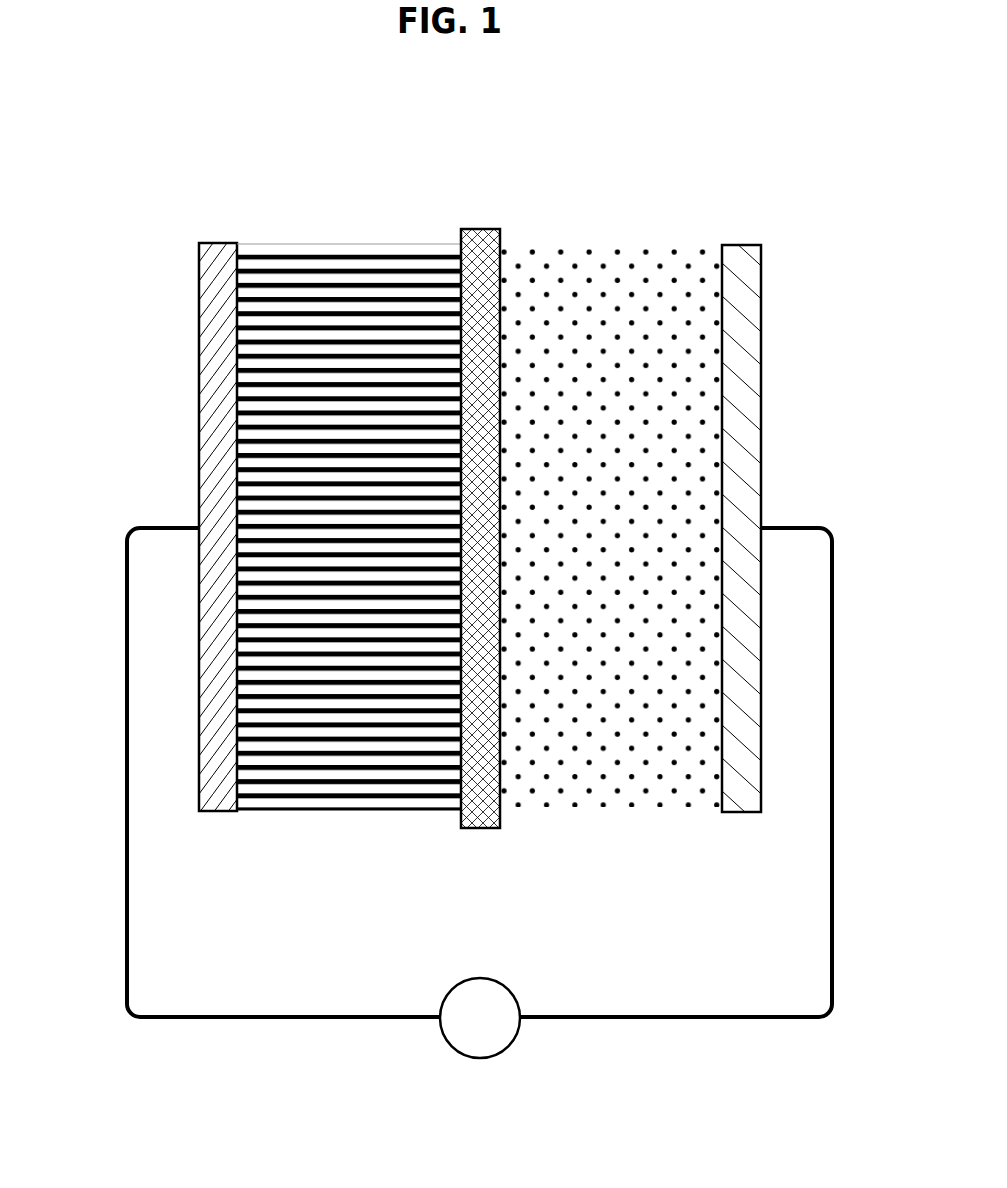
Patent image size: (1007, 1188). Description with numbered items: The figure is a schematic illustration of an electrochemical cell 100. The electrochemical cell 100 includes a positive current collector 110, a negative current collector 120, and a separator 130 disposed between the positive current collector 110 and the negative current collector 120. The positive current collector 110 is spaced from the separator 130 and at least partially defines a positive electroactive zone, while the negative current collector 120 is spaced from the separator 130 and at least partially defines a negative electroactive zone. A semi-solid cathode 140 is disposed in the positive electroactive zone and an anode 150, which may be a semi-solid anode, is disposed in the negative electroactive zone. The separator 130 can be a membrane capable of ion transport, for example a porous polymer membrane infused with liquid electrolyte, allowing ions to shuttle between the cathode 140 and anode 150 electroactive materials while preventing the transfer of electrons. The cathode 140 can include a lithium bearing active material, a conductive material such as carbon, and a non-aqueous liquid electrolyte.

The electrochemical cell 100 is at (798, 196).
The positive current collector 110 is at (735, 245).
The negative current collector 120 is at (198, 243).
The separator 130 is at (478, 229).
The semi-solid cathode 140 is at (554, 245).
The anode 150 is at (292, 243).